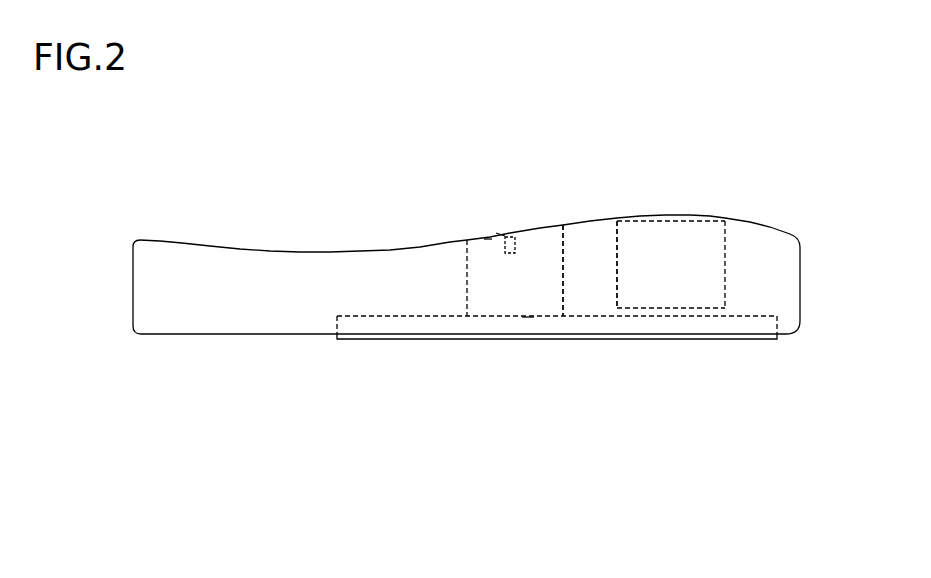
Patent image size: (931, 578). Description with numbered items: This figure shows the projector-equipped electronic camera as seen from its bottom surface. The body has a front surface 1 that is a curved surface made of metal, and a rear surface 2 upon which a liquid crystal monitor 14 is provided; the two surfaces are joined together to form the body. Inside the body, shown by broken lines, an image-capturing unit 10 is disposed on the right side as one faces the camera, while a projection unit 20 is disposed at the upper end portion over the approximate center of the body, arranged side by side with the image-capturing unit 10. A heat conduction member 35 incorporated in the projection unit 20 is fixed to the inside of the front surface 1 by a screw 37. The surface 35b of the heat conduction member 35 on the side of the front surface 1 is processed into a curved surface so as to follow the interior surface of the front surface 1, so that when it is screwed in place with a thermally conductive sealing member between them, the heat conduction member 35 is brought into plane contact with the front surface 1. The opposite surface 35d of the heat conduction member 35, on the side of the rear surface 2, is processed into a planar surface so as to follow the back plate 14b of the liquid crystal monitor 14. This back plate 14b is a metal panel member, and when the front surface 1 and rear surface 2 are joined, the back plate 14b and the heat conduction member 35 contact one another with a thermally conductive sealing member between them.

The front surface 1 is at (182, 243).
The rear surface 2 is at (183, 336).
The image-capturing unit 10 is at (733, 268).
The liquid crystal monitor 14 is at (686, 339).
The back plate 14b is at (397, 319).
The projection unit 20 is at (461, 286).
The heat conduction member 35 is at (547, 278).
The surface of heat conduction member on front surface side 35b is at (488, 240).
The surface of heat conduction member on rear surface side 35d is at (528, 318).
The screw 37 is at (510, 235).